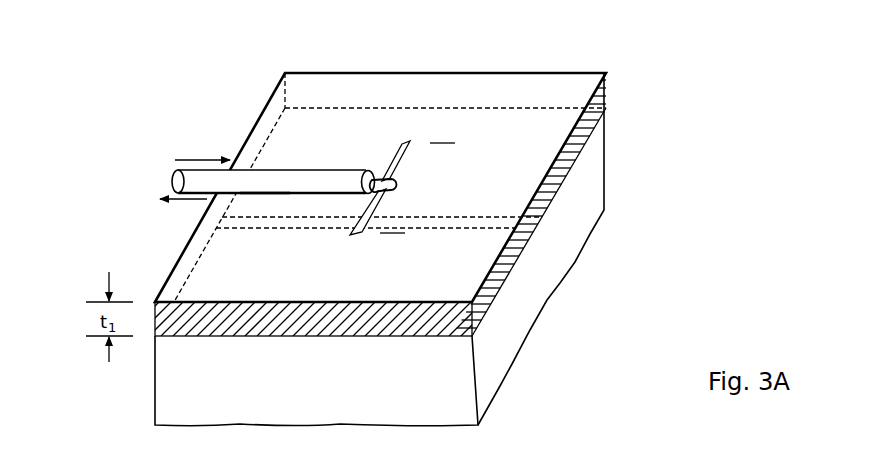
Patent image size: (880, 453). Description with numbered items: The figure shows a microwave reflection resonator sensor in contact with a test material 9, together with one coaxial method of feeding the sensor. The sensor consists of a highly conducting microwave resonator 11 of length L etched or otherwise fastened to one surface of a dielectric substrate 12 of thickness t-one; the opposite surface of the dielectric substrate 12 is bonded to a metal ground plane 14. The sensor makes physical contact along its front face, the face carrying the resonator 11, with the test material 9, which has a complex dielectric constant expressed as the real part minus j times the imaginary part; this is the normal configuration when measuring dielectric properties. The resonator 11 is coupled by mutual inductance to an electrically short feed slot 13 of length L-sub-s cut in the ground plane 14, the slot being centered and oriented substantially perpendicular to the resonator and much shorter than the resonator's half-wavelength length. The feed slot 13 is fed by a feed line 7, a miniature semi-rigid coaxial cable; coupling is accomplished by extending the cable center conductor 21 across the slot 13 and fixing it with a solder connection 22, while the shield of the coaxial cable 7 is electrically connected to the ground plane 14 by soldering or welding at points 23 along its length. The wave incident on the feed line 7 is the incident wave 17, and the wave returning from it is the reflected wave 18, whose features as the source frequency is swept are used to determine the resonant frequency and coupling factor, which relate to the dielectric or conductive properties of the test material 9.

The feed line 7 is at (332, 180).
The test material 9 is at (593, 167).
The microwave resonator 11 is at (538, 222).
The dielectric substrate 12 is at (500, 275).
The feed slot 13 is at (407, 143).
The ground plane 14 is at (603, 80).
The incident wave 17 is at (202, 146).
The reflected wave 18 is at (183, 214).
The cable center conductor 21 is at (377, 179).
The solder connection 22 is at (395, 232).
The soldering or welding points 23 is at (262, 193).